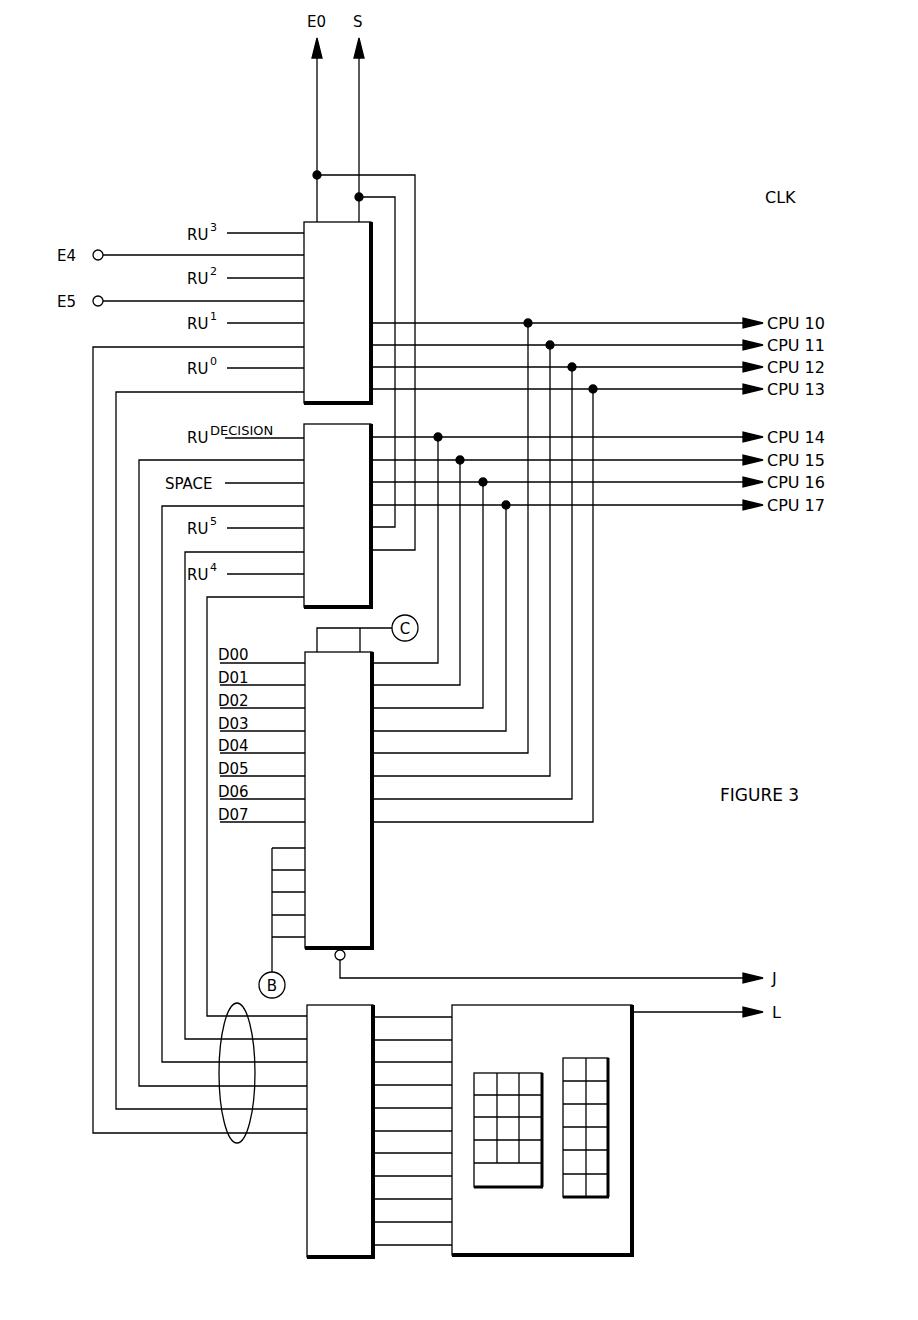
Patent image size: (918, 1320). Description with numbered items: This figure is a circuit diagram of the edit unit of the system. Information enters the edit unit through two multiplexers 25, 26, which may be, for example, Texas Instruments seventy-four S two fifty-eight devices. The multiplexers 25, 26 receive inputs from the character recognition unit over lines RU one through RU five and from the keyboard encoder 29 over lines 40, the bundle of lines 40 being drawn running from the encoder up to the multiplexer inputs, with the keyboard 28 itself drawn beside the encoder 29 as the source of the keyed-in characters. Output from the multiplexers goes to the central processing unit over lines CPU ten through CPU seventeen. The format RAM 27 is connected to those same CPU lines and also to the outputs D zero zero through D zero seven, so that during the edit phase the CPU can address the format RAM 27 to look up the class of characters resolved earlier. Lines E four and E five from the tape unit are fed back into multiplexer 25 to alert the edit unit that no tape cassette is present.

The multiplexer 25 is at (371, 296).
The multiplexer 26 is at (371, 578).
The format RAM 27 is at (372, 893).
The keyboard 28 is at (632, 1172).
The keyboard encoder 29 is at (307, 1228).
The lines 40 is at (240, 1143).